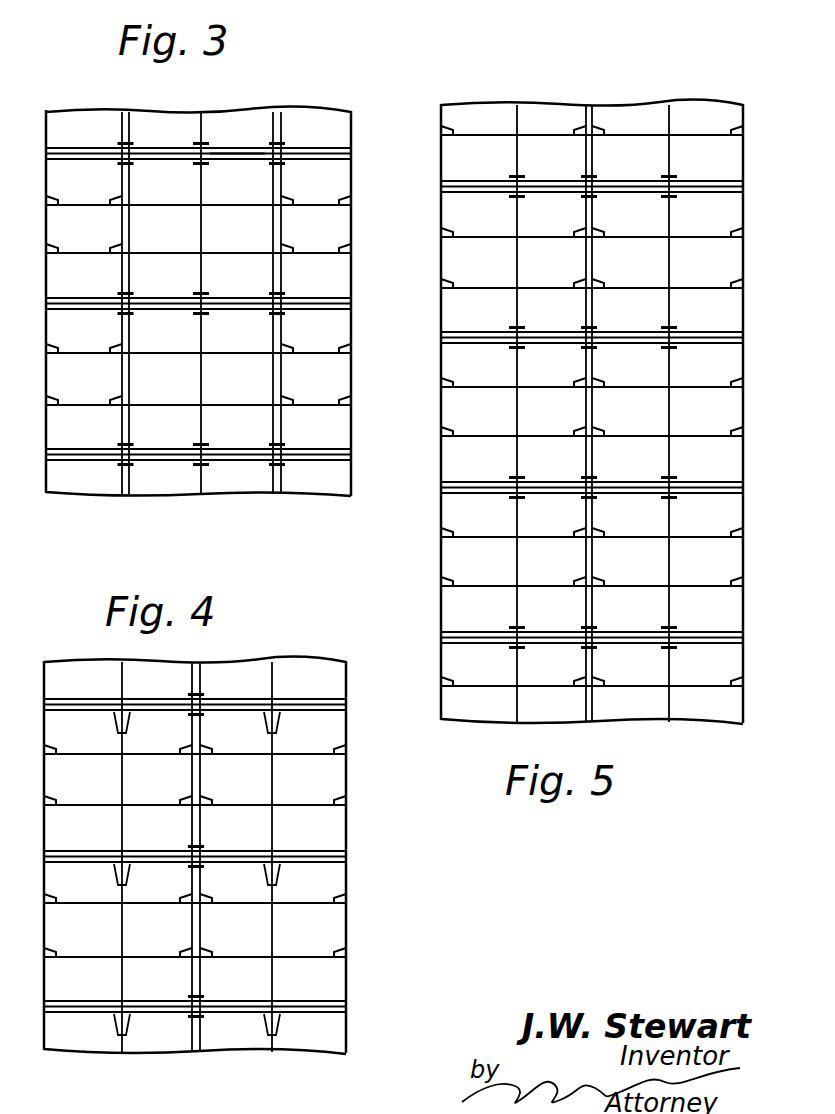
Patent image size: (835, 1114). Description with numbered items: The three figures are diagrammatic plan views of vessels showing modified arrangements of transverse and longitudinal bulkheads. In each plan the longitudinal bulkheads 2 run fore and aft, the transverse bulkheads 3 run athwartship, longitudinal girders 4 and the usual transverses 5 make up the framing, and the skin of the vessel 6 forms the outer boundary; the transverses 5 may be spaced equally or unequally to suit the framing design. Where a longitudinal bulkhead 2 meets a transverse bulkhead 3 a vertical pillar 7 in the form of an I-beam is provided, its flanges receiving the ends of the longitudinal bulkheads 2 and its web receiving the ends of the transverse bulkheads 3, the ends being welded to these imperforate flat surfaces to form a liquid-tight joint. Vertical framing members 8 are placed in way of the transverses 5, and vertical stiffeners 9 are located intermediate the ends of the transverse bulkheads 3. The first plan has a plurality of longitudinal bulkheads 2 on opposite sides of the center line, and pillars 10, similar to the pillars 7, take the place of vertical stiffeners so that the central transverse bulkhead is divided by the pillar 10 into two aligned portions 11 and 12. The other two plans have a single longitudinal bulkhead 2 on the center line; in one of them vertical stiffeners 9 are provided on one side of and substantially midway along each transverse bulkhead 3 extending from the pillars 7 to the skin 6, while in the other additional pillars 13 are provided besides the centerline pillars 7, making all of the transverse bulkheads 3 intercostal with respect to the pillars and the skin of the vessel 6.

In FIG. 3, the longitudinal bulkhead 2 is at (201, 303).
In FIG. 4, the longitudinal bulkhead 2 is at (206, 857).
In FIG. 5, the longitudinal bulkhead 2 is at (601, 413).
In FIG. 3, the transverse bulkhead 3 is at (198, 304).
In FIG. 4, the transverse bulkhead 3 is at (195, 846).
In FIG. 5, the transverse bulkhead 3 is at (592, 400).
In FIG. 3, the longitudinal girder 4 is at (211, 303).
In FIG. 3, the transverse 5 is at (198, 293).
In FIG. 4, the transverse 5 is at (195, 855).
In FIG. 5, the transverse 5 is at (592, 410).
In FIG. 3, the skin of the vessel 6 is at (195, 301).
In FIG. 4, the skin of the vessel 6 is at (192, 855).
In FIG. 5, the skin of the vessel 6 is at (587, 412).
In FIG. 3, the vertical pillar 7 is at (211, 304).
In FIG. 4, the vertical pillar 7 is at (206, 847).
In FIG. 5, the vertical pillar 7 is at (593, 402).
In FIG. 3, the vertical framing member 8 is at (198, 300).
In FIG. 4, the vertical framing member 8 is at (195, 847).
In FIG. 5, the vertical framing member 8 is at (592, 406).
In FIG. 4, the vertical stiffener 9 is at (198, 873).
In FIG. 3, the pillar 10 is at (200, 304).
In FIG. 3, the aligned portion of central transverse bulkhead 11 is at (167, 137).
In FIG. 3, the aligned portion of central transverse bulkhead 12 is at (237, 140).
In FIG. 5, the pillar 13 is at (606, 401).